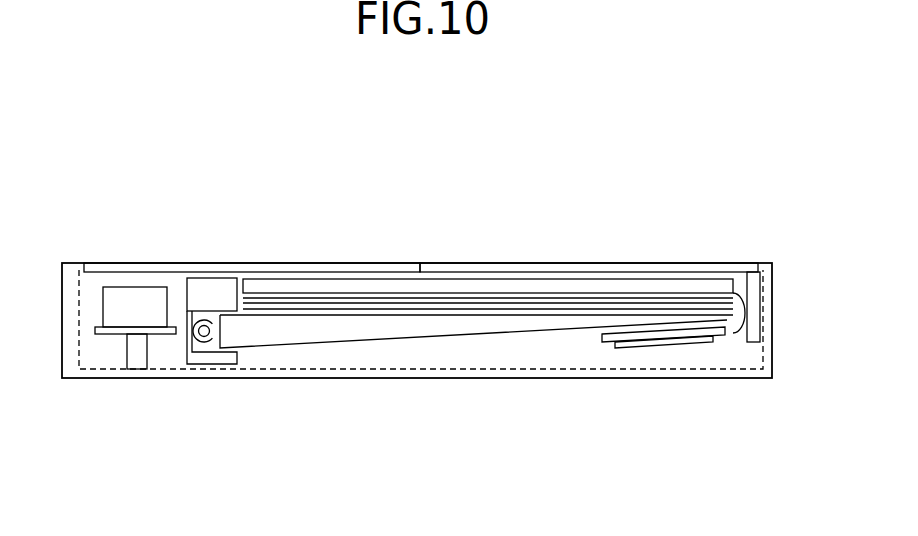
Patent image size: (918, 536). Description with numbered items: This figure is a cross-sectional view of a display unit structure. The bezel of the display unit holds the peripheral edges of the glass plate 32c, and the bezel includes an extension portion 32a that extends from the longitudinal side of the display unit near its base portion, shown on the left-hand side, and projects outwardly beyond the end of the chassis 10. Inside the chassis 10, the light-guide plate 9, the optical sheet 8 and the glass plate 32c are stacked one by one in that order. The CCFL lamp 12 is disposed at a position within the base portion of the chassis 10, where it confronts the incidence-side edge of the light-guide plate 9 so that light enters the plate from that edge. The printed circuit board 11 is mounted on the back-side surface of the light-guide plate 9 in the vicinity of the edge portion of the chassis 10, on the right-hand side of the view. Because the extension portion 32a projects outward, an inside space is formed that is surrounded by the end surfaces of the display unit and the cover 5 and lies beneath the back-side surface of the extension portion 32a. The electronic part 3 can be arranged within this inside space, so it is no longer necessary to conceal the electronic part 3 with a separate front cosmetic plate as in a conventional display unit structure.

The electronic part 3 is at (95, 331).
The cover 5 is at (772, 352).
The optical sheet 8 is at (351, 300).
The light-guide plate 9 is at (403, 330).
The chassis 10 is at (213, 287).
The printed circuit board 11 is at (667, 347).
The CCFL lamp 12 is at (210, 337).
The extension portion 32a is at (127, 263).
The glass plate 32c is at (502, 278).